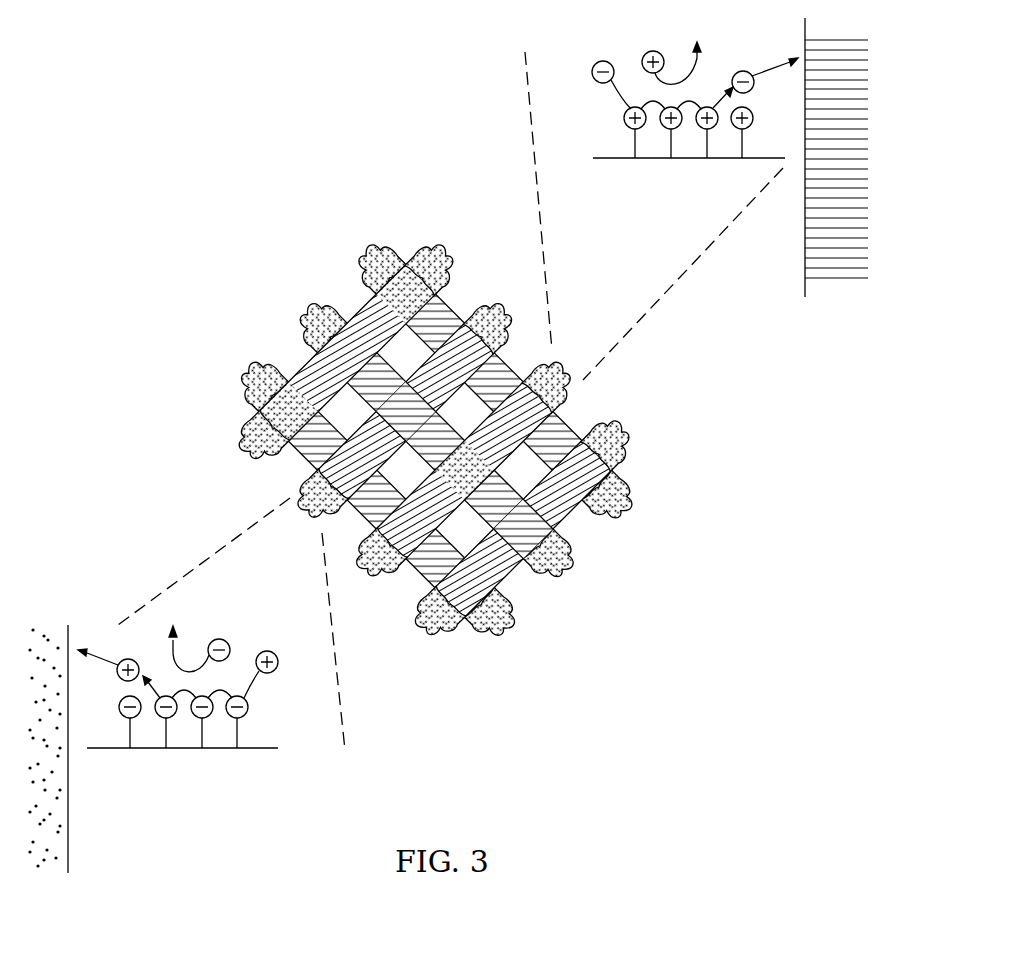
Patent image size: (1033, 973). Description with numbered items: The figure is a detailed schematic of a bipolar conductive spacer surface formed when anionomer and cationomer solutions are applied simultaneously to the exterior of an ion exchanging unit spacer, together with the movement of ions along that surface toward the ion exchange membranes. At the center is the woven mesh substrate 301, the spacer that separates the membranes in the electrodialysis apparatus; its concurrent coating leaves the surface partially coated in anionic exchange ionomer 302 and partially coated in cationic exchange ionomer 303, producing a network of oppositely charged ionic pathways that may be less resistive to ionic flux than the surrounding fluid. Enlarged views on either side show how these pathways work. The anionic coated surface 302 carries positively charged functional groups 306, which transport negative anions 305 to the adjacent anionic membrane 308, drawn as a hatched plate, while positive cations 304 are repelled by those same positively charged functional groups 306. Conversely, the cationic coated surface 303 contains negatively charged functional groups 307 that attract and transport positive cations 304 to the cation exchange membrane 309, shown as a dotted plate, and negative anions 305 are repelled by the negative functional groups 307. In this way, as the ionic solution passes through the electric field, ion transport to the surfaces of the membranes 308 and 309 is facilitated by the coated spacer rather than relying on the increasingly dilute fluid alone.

The mesh substrate 301 is at (292, 296).
The anionic exchange ionomer 302 is at (448, 247).
The cationic exchange ionomer 303 is at (421, 642).
The positive cations 304 is at (653, 50).
The negative anions 305 is at (221, 638).
The positively charged functional groups 306 is at (621, 121).
The negatively charged functional groups 307 is at (255, 712).
The anionic membrane 308 is at (836, 294).
The cation exchange membrane 309 is at (70, 788).